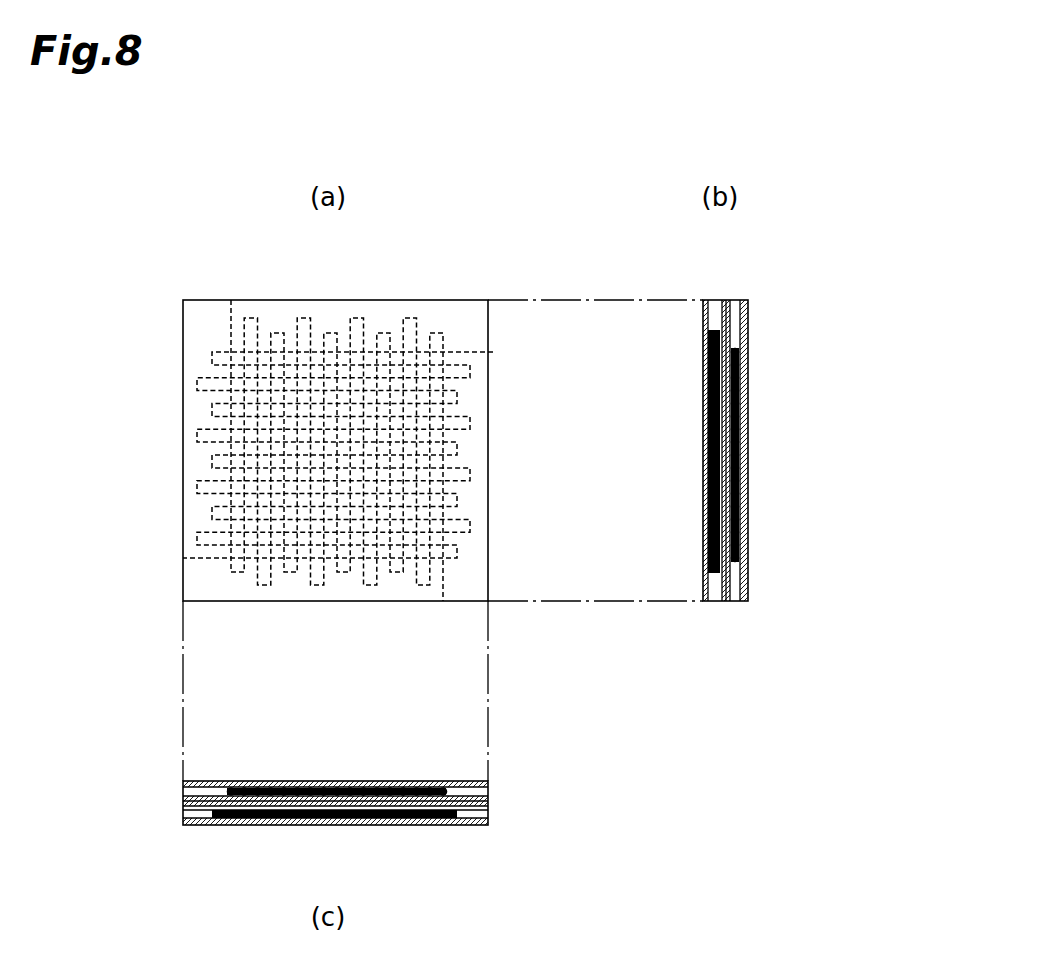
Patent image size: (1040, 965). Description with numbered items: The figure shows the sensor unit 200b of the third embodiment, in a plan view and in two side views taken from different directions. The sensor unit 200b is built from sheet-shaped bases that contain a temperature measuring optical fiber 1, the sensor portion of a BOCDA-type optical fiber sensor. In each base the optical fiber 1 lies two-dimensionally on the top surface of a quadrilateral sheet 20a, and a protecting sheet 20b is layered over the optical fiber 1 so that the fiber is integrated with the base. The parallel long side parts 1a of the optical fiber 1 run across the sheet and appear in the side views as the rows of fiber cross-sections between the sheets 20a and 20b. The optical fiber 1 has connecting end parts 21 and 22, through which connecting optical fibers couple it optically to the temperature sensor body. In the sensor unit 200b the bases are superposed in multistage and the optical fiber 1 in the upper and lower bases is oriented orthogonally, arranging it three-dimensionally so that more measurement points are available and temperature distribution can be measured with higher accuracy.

The sensor unit 200b is at (183, 328).
The connecting end part 21 is at (231, 300).
The connecting end part 22 is at (183, 558).
The optical fiber 1 is at (442, 322).
The long side part 1a is at (740, 355).
The sheet 20a is at (720, 300).
The protecting sheet 20b is at (705, 300).